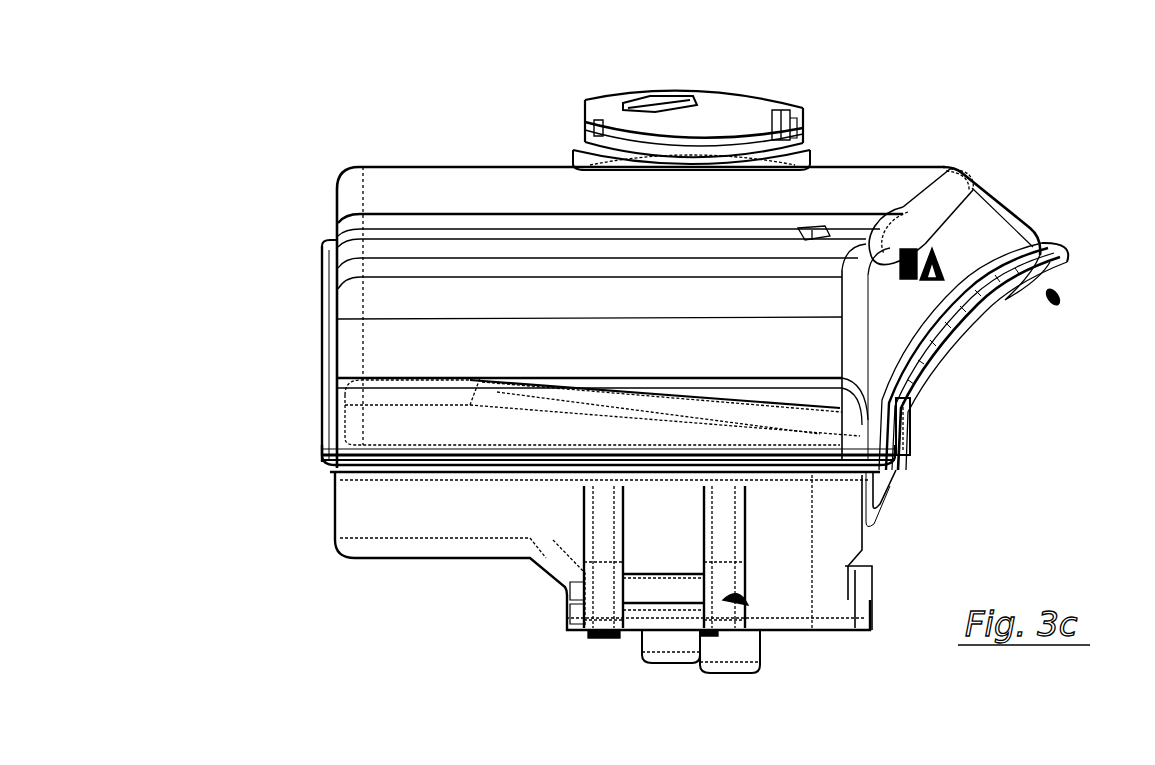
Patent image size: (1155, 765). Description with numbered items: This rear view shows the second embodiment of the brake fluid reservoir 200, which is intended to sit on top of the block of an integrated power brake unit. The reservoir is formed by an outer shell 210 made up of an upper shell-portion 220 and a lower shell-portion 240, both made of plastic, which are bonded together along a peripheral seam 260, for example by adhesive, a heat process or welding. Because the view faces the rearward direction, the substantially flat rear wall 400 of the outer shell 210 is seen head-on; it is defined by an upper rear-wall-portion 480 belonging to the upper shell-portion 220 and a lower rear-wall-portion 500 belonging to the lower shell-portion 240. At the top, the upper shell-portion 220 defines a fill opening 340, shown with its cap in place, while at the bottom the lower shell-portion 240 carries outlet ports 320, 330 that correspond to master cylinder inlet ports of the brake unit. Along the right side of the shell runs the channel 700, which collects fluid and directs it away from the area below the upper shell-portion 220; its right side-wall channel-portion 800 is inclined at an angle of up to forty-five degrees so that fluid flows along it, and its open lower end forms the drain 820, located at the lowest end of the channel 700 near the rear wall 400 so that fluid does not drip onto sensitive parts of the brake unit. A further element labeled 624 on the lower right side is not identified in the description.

The brake fluid reservoir 200 is at (930, 138).
The outer shell 210 is at (1004, 189).
The upper shell-portion 220 is at (392, 150).
The lower shell-portion 240 is at (410, 528).
The peripheral seam 260 is at (325, 464).
The outlet port 320 is at (652, 655).
The outlet port 330 is at (735, 660).
The fill opening 340 is at (768, 92).
The rear wall 400 is at (362, 422).
The upper rear-wall-portion 480 is at (470, 440).
The lower rear-wall-portion 500 is at (485, 531).
The hose flange 624 is at (912, 420).
The channel 700 is at (1060, 305).
The right side-wall channel-portion 800 is at (963, 334).
The drain 820 is at (897, 470).